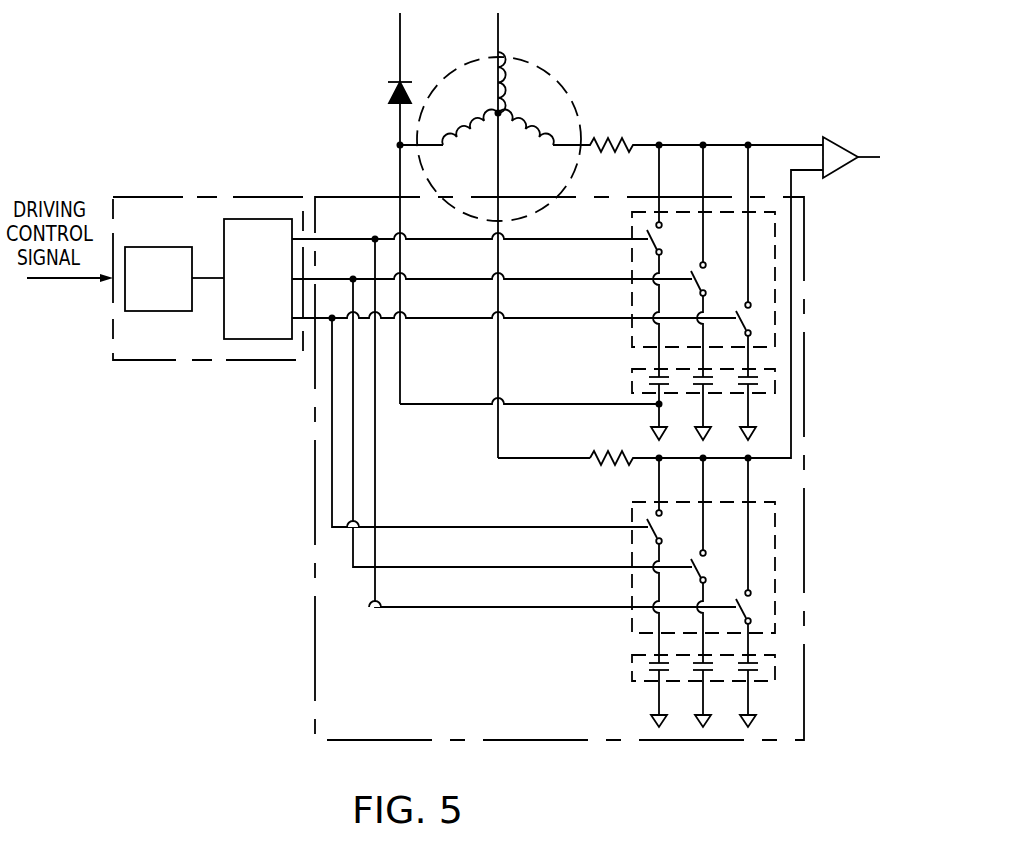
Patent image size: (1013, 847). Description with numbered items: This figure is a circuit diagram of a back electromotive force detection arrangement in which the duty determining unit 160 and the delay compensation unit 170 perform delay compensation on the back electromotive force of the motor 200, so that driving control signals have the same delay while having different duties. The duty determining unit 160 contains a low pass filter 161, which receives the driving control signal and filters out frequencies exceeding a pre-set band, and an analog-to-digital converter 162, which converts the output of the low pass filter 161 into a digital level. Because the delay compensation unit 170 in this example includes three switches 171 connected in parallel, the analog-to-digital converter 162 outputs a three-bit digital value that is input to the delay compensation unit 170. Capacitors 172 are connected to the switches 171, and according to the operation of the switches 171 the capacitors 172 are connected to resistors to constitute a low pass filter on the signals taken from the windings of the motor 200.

The duty determining unit 160 is at (254, 197).
The low pass filter (LPF) 161 is at (157, 311).
The analog-to-digital converter (ADC) 162 is at (257, 339).
The delay compensation unit 170 is at (805, 230).
The switches 171 is at (775, 279).
The capacitors 172 is at (775, 381).
The motor 200 is at (553, 80).